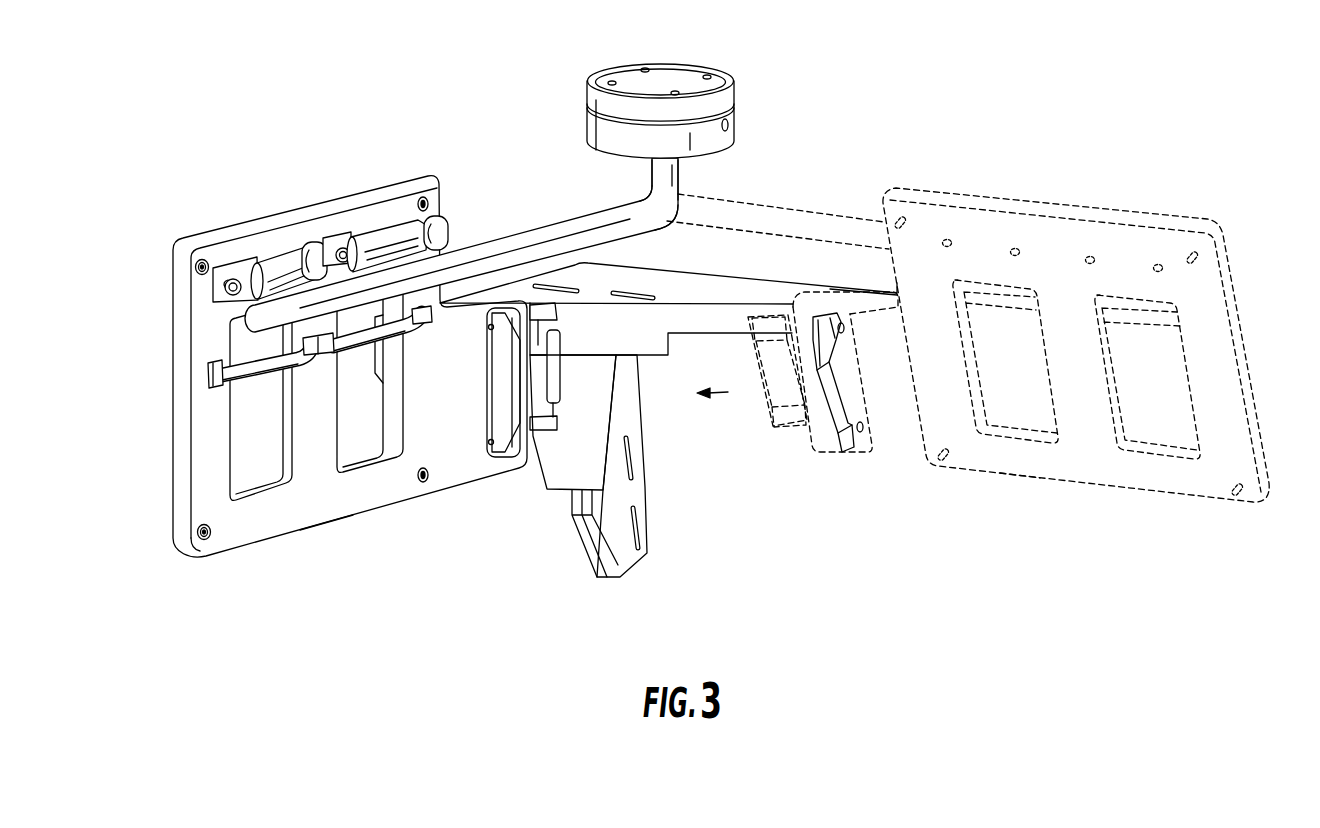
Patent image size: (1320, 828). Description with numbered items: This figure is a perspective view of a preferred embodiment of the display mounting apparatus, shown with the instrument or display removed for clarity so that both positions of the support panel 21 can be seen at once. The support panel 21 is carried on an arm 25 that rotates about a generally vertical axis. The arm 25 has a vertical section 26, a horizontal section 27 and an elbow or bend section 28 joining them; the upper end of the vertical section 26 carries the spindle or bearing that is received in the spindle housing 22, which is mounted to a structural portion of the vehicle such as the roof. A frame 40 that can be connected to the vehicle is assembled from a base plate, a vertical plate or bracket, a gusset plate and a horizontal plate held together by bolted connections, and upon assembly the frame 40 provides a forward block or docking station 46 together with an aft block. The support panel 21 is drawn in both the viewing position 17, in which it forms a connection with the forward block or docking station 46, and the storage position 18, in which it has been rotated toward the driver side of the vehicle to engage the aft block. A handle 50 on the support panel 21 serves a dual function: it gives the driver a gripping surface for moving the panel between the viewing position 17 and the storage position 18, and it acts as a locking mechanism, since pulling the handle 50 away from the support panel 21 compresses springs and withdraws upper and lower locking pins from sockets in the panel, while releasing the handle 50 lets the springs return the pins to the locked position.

The viewing position 17 is at (1198, 572).
The storage position 18 is at (409, 599).
The support panel 21 is at (353, 515).
The spindle housing 22 is at (735, 124).
The arm 25 is at (555, 222).
The vertical section 26 is at (648, 162).
The horizontal section 27 is at (770, 235).
The elbow or bend section 28 is at (682, 195).
The frame 40 is at (623, 578).
The forward block or docking station 46 is at (846, 445).
The handle 50 is at (752, 362).